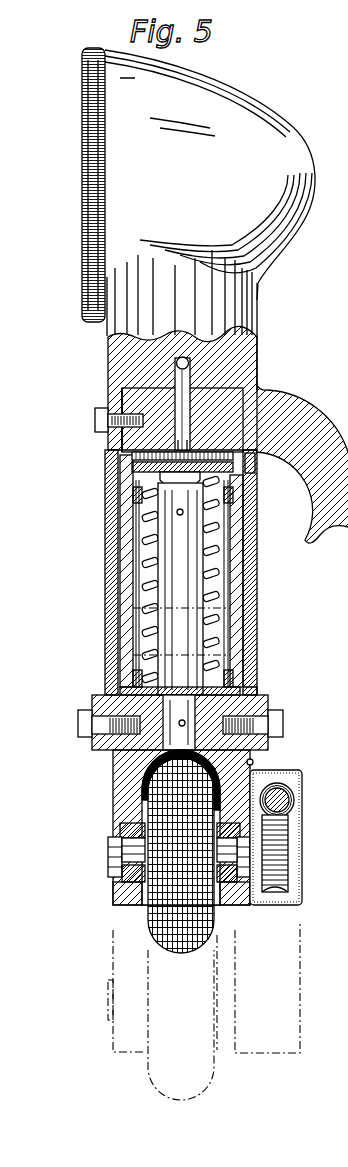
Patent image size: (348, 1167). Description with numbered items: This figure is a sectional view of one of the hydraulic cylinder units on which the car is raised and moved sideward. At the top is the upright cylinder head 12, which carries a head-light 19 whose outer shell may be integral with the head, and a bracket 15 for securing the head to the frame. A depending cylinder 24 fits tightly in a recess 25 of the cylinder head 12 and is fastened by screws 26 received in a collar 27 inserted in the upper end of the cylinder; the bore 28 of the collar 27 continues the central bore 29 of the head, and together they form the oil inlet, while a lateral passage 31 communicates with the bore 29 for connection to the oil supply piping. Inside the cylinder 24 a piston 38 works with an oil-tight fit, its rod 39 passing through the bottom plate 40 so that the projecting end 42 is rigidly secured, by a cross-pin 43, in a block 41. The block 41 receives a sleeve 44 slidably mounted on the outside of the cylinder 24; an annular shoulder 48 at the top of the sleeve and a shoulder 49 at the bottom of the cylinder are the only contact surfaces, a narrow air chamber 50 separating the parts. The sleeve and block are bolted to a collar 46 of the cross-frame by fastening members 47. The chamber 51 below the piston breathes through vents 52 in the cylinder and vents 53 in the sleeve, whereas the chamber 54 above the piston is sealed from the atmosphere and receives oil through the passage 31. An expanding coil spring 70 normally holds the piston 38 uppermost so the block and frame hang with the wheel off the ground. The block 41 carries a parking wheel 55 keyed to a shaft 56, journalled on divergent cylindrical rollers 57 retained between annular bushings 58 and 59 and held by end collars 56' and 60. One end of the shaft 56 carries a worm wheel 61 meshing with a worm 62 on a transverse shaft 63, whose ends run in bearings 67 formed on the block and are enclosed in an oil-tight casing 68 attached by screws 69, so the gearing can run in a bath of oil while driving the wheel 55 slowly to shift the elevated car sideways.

The cylinder head 12 is at (240, 303).
The bracket 15 is at (312, 532).
The head-light 19 is at (252, 100).
The cylinder 24 is at (122, 550).
The recess 25 is at (120, 398).
The screws 26 is at (95, 412).
The collar 27 is at (223, 402).
The bore 28 is at (180, 439).
The central bore 29 is at (177, 381).
The lateral passage 31 is at (175, 335).
The piston 38 is at (150, 503).
The piston rod 39 is at (175, 649).
The bottom plate 40 is at (125, 692).
The block 41 is at (120, 778).
The projecting end 42 is at (165, 742).
The cross-pin 43 is at (185, 724).
The sleeve 44 is at (110, 592).
The collar 46 is at (96, 708).
The fastening members 47 is at (78, 732).
The annular shoulder 48 is at (118, 474).
The shoulder 49 is at (250, 692).
The air chamber 50 is at (247, 553).
The chamber 51 is at (142, 620).
The vents 52 is at (135, 678).
The vents 53 is at (137, 493).
The chamber 54 is at (135, 465).
The parking wheel 55 is at (150, 920).
The shaft 56 is at (144, 855).
The end collar 56' is at (141, 880).
The rollers 57 is at (117, 888).
The annular bushing 58 is at (110, 842).
The annular bushing 59 is at (128, 830).
The end collar 60 is at (265, 860).
The worm wheel 61 is at (287, 858).
The worm 62 is at (290, 812).
The transverse shaft 63 is at (293, 800).
The bearings 67 is at (290, 787).
The casing 68 is at (301, 826).
The screws 69 is at (253, 765).
The coil spring 70 is at (150, 590).